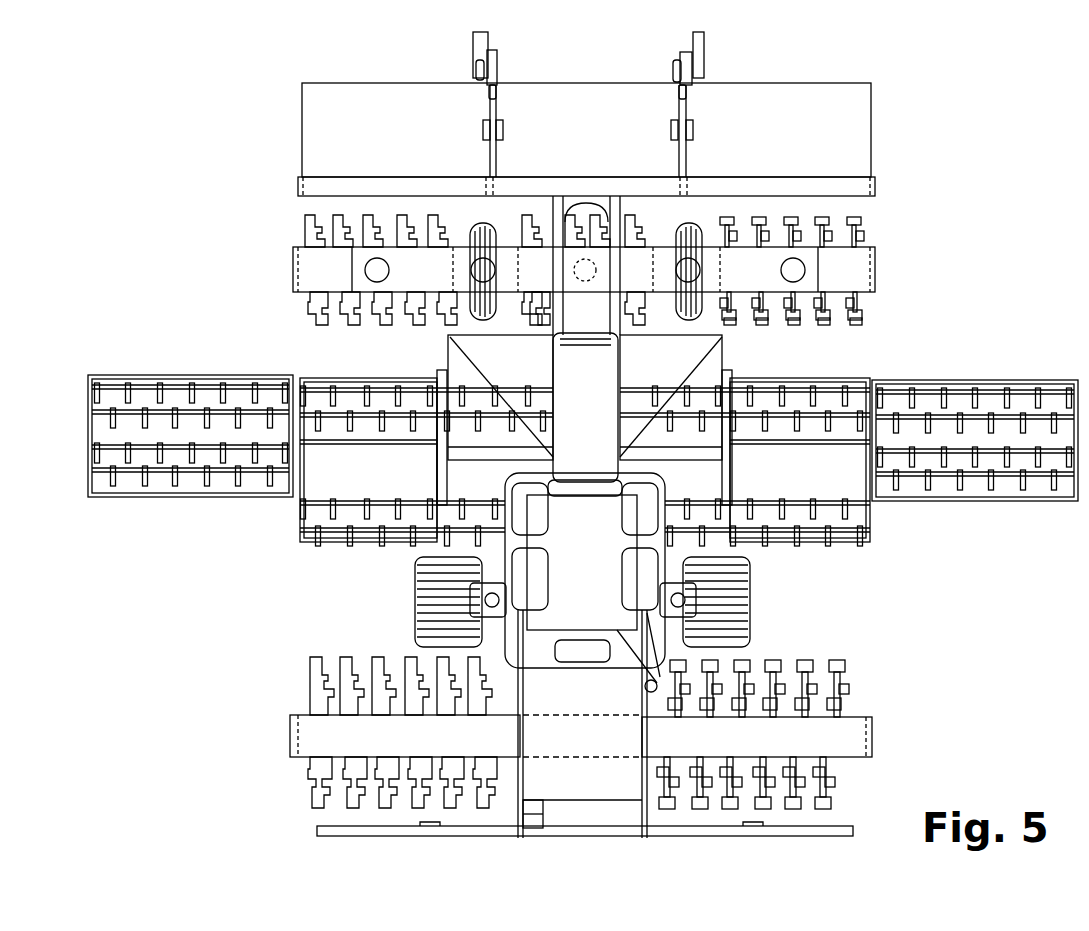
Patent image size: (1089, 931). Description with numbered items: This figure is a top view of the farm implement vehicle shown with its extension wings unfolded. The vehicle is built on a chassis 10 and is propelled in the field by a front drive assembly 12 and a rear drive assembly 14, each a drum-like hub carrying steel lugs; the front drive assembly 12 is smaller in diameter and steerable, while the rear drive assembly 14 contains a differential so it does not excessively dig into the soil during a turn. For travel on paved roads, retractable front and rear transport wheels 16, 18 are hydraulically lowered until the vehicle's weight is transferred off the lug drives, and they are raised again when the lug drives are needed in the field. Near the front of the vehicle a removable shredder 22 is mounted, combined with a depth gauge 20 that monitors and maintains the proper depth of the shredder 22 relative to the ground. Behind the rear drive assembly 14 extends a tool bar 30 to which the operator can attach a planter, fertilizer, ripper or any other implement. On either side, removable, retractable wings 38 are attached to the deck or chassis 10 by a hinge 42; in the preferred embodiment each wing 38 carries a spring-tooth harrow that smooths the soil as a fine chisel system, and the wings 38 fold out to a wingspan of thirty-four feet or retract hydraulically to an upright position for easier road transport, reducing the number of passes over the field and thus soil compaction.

The chassis 10 is at (585, 570).
The front drive assembly 12 is at (302, 245).
The rear drive assembly 14 is at (292, 714).
The front transport wheel 16 is at (478, 226).
The rear transport wheel 18 is at (415, 615).
The depth gauge 20 is at (473, 40).
The shredder 22 is at (871, 146).
The tool bar 30 is at (320, 828).
The wing 38 is at (142, 498).
The hinge 42 is at (293, 500).